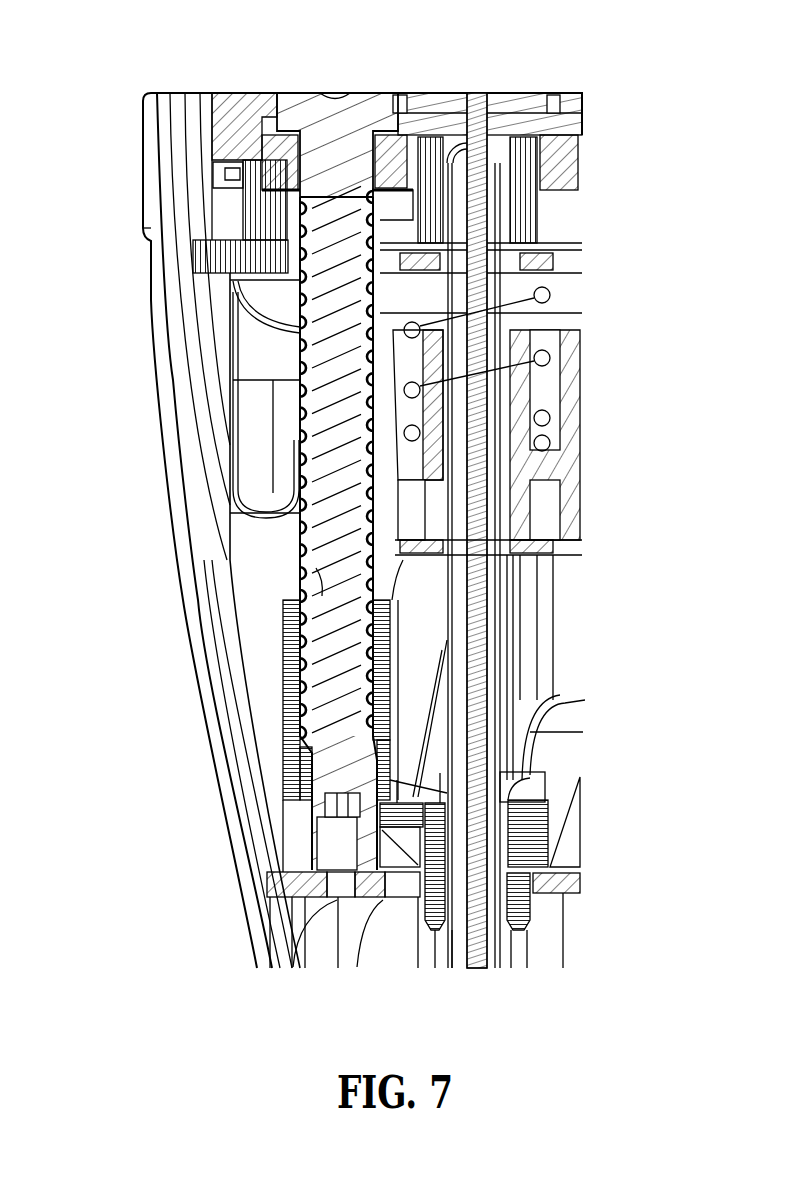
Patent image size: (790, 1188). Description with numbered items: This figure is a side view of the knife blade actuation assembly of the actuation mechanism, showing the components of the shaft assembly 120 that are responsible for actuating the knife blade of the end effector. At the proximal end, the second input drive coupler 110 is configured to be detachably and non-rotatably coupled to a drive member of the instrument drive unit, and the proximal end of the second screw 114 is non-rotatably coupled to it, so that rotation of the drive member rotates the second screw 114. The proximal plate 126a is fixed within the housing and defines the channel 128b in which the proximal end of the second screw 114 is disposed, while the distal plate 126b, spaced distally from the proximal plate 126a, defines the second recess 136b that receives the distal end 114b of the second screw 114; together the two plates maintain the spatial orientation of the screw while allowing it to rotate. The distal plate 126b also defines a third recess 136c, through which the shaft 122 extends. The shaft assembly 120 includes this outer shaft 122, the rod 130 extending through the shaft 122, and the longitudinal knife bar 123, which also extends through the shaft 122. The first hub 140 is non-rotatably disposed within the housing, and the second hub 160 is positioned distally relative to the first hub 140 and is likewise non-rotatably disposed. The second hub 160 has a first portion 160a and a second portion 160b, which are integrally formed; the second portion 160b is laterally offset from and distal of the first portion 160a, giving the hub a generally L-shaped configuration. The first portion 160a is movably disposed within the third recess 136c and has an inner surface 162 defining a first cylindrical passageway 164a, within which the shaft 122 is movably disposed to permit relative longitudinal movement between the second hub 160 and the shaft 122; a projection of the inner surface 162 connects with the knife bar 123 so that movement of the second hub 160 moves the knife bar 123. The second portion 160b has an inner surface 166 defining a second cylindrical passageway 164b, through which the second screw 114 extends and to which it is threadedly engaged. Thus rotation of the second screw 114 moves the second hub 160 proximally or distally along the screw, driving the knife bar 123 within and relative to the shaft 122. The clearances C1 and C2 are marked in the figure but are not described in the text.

The second input drive coupler 110 is at (301, 92).
The proximal plate 126a is at (236, 204).
The first clearance C1 is at (555, 262).
The channel 128b is at (300, 284).
The second screw 114 is at (290, 343).
The shaft assembly 120 is at (257, 416).
The first hub 140 is at (553, 386).
The second clearance C2 is at (556, 545).
The rod 130 is at (478, 572).
The shaft 122 is at (506, 617).
The longitudinal knife bar 123 is at (503, 767).
The first cylindrical passageway 164a is at (520, 793).
The third recess 136c is at (535, 867).
The inner surface 162 is at (508, 920).
The first portion 160a is at (421, 913).
The second recess 136b is at (328, 880).
The distal plate 126b is at (297, 848).
The distal end 114b is at (323, 810).
The second cylindrical passageway 164b is at (303, 763).
The second hub 160 is at (262, 698).
The second portion 160b is at (292, 650).
The inner surface 166 is at (310, 565).